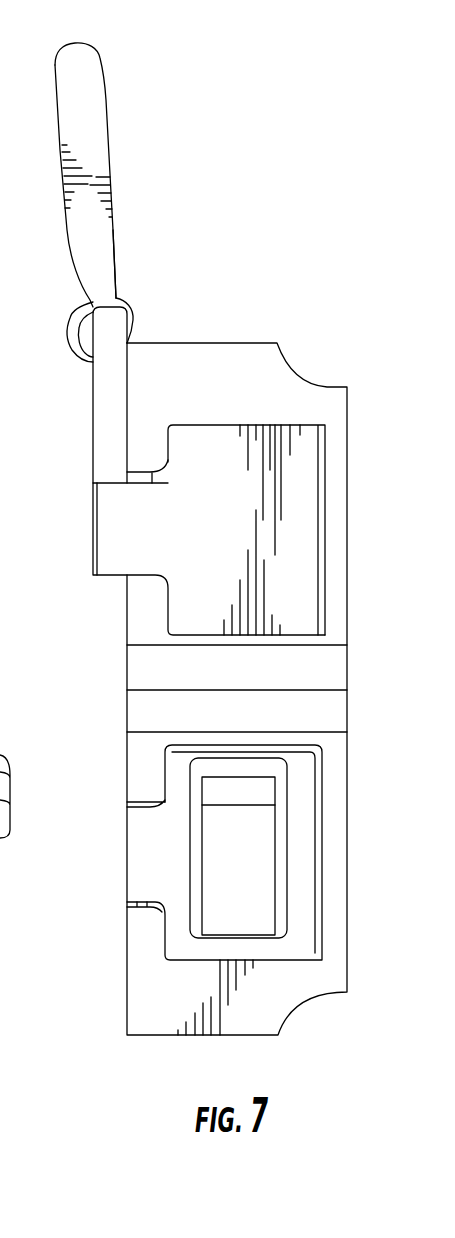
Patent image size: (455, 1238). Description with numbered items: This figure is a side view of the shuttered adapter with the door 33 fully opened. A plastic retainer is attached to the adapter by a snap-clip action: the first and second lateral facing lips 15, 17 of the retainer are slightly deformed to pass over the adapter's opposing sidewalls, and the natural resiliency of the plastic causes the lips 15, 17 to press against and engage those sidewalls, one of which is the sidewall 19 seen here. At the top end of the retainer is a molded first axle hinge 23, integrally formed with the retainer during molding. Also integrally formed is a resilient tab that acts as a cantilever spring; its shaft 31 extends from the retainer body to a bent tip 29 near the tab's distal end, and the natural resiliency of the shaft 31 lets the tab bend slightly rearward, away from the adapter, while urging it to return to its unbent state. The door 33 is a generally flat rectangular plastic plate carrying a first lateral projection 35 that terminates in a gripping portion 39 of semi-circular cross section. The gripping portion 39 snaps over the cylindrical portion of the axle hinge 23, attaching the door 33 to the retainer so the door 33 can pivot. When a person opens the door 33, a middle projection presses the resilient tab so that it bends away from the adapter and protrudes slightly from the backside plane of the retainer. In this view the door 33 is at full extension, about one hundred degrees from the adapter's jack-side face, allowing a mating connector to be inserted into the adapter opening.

The first lateral facing lip 15 is at (211, 539).
The second lateral facing lip 17 is at (0, 612).
The sidewall 19 is at (251, 403).
The first axle hinge 23 is at (107, 330).
The bent tip 29 is at (72, 317).
The shaft 31 is at (79, 347).
The door 33 is at (97, 106).
The first lateral projection 35 is at (116, 283).
The gripping portion 39 is at (133, 320).